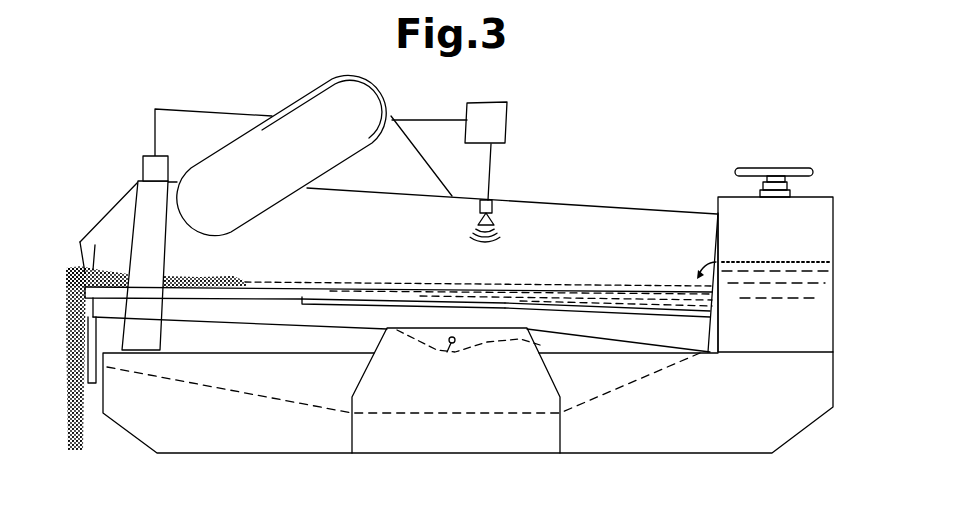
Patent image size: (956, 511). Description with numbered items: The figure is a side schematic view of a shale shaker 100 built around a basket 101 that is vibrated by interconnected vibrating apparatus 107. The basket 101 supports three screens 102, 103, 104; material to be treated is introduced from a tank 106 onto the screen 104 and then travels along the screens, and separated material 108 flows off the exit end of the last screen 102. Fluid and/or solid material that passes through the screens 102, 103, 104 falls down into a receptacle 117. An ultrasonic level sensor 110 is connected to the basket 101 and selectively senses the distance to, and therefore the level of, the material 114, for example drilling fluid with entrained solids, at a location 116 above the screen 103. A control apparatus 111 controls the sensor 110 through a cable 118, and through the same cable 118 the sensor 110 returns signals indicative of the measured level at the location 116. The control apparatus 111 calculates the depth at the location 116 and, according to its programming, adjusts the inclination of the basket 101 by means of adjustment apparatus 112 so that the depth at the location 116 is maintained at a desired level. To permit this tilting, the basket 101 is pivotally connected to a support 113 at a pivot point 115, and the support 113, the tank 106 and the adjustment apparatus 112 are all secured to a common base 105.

The shale shaker 100 is at (643, 190).
The basket 101 is at (650, 247).
The screen 102 is at (264, 299).
The screen 103 is at (331, 297).
The screen 104 is at (588, 303).
The base 105 is at (682, 412).
The tank 106 is at (798, 332).
The vibrating apparatus 107 is at (308, 165).
The separated material 108 is at (88, 255).
The ultrasonic level sensor 110 is at (497, 207).
The control apparatus 111 is at (497, 118).
The adjustment apparatus 112 is at (150, 204).
The support 113 is at (398, 365).
The material 114 is at (320, 288).
The pivot point 115 is at (447, 352).
The location 116 is at (481, 285).
The receptacle 117 is at (247, 394).
The cable 118 is at (485, 189).